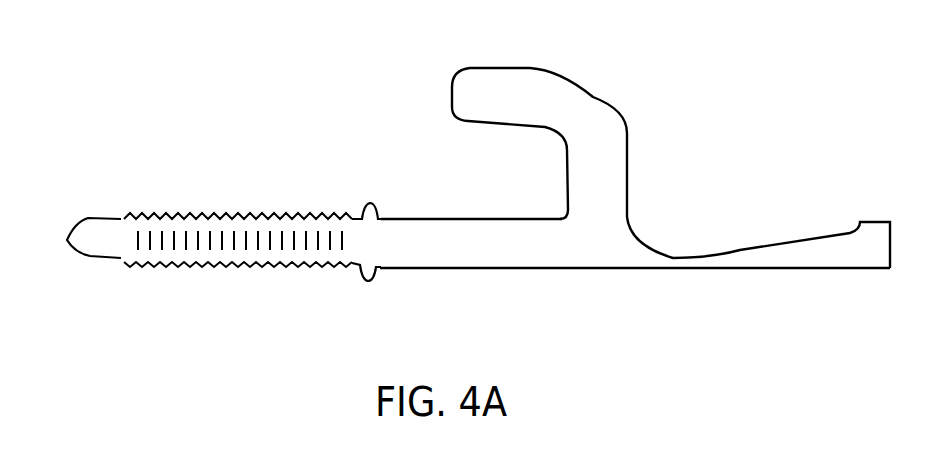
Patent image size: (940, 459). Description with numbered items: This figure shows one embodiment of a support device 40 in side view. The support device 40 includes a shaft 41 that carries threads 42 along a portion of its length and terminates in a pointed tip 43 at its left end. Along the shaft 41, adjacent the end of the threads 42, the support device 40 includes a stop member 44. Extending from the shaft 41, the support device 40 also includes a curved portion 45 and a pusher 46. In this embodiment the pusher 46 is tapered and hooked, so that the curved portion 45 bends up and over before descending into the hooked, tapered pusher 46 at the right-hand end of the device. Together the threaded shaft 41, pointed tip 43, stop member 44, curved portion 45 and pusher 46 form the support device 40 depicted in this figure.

The support device 40 is at (369, 108).
The shaft 41 is at (437, 219).
The threads 42 is at (225, 218).
The pointed tip 43 is at (67, 240).
The stop member 44 is at (373, 281).
The curved portion 45 is at (595, 97).
The pusher 46 is at (760, 245).